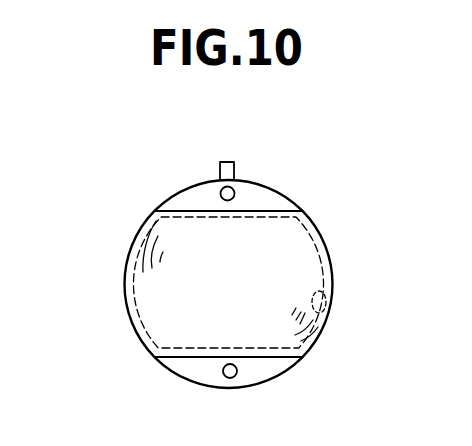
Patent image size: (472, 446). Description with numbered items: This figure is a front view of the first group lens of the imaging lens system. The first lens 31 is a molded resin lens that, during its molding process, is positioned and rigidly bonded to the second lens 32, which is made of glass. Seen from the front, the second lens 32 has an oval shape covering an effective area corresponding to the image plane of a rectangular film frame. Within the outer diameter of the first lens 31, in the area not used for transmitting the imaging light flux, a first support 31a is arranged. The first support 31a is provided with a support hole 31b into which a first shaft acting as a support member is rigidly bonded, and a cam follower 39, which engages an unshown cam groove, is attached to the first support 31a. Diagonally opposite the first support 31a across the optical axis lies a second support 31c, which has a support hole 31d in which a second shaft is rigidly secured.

The first lens 31 is at (157, 318).
The first support 31a is at (268, 202).
The support hole 31b is at (222, 190).
The second support 31c is at (193, 368).
The support hole 31d is at (238, 376).
The second lens 32 is at (328, 313).
The cam follower 39 is at (228, 172).